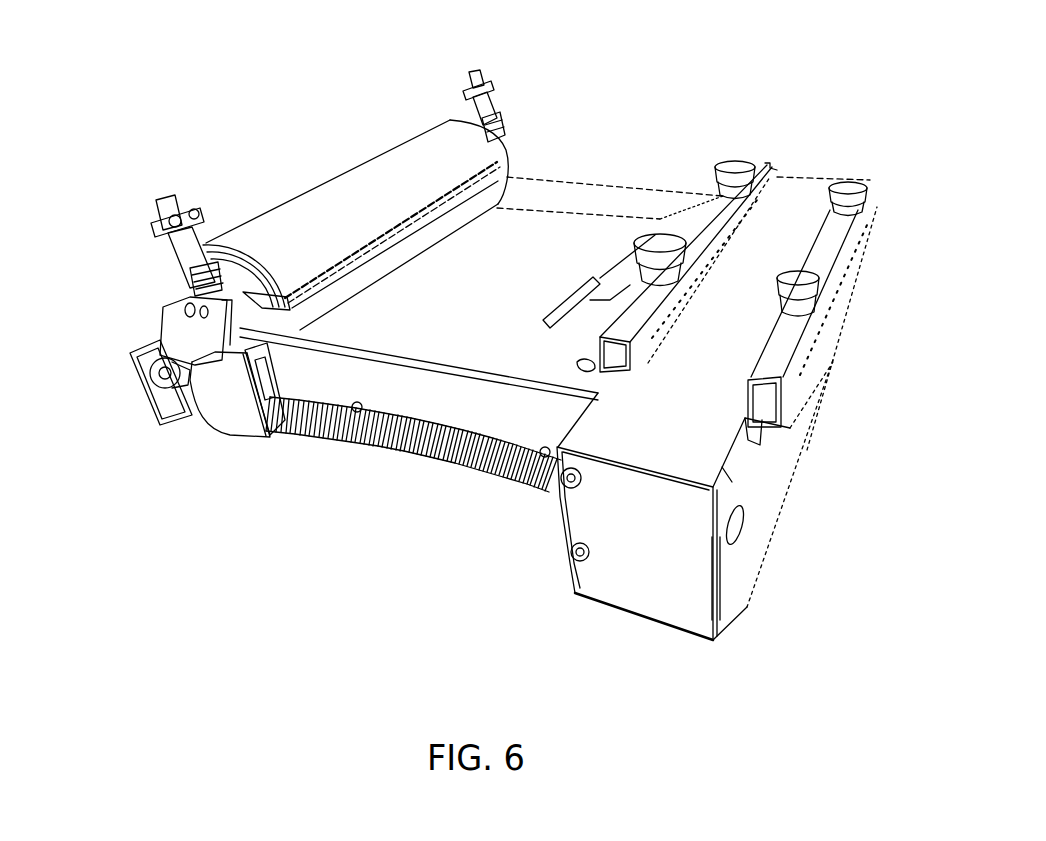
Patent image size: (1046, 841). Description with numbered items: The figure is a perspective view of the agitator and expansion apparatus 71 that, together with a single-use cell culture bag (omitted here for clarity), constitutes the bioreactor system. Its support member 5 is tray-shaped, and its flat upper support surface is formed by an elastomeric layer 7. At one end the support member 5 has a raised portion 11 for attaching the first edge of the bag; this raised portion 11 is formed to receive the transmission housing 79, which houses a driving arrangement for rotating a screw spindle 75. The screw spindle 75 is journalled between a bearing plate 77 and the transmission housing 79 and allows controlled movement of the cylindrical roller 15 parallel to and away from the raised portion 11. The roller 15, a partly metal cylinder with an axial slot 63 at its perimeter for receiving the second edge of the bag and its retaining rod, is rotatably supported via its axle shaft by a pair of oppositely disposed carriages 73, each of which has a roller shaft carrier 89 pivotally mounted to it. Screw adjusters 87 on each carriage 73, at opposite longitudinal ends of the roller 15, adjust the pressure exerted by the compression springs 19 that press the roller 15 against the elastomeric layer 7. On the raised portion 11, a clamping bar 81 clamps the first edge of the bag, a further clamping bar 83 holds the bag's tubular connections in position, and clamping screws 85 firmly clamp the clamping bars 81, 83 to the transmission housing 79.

The support member 5 is at (463, 417).
The elastomeric layer 7 is at (488, 250).
The raised portion 11 is at (589, 380).
The cylindrical roller 15 is at (362, 203).
The compression springs 19 is at (197, 280).
The axial slot 63 is at (367, 257).
The agitator and expansion apparatus 71 is at (620, 118).
The carriages 73 is at (230, 413).
The screw spindle 75 is at (355, 432).
The bearing plate 77 is at (137, 387).
The transmission housing 79 is at (777, 490).
The clamping bar 81 is at (635, 312).
The further clamping bar 83 is at (832, 247).
The clamping screws 85 is at (714, 163).
The screw adjusters 87 is at (185, 248).
The roller shaft carrier 89 is at (183, 318).